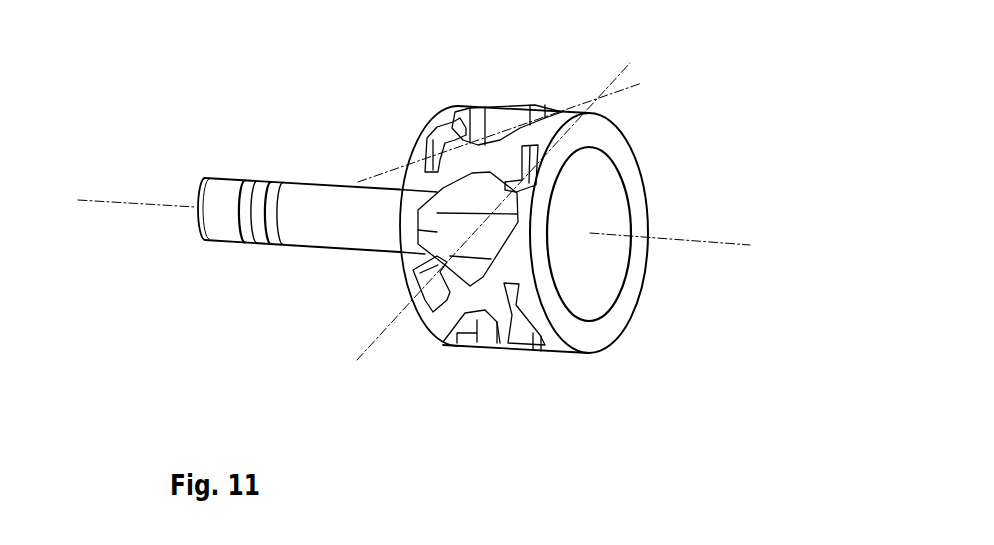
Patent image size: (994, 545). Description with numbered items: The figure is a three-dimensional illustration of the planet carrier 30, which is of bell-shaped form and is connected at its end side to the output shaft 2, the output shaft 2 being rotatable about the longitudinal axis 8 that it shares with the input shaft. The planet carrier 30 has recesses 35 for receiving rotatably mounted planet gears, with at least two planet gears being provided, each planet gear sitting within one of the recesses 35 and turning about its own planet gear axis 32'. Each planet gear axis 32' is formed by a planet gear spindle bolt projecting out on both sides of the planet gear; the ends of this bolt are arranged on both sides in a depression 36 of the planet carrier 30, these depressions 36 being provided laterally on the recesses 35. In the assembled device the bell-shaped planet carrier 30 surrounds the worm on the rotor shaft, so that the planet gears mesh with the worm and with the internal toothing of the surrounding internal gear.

The output shaft 2 is at (323, 200).
The longitudinal axis 8 is at (678, 240).
The planet carrier 30 is at (628, 162).
The planet gear axis 32' is at (482, 242).
The recess 35 is at (492, 133).
The depression 36 is at (441, 135).